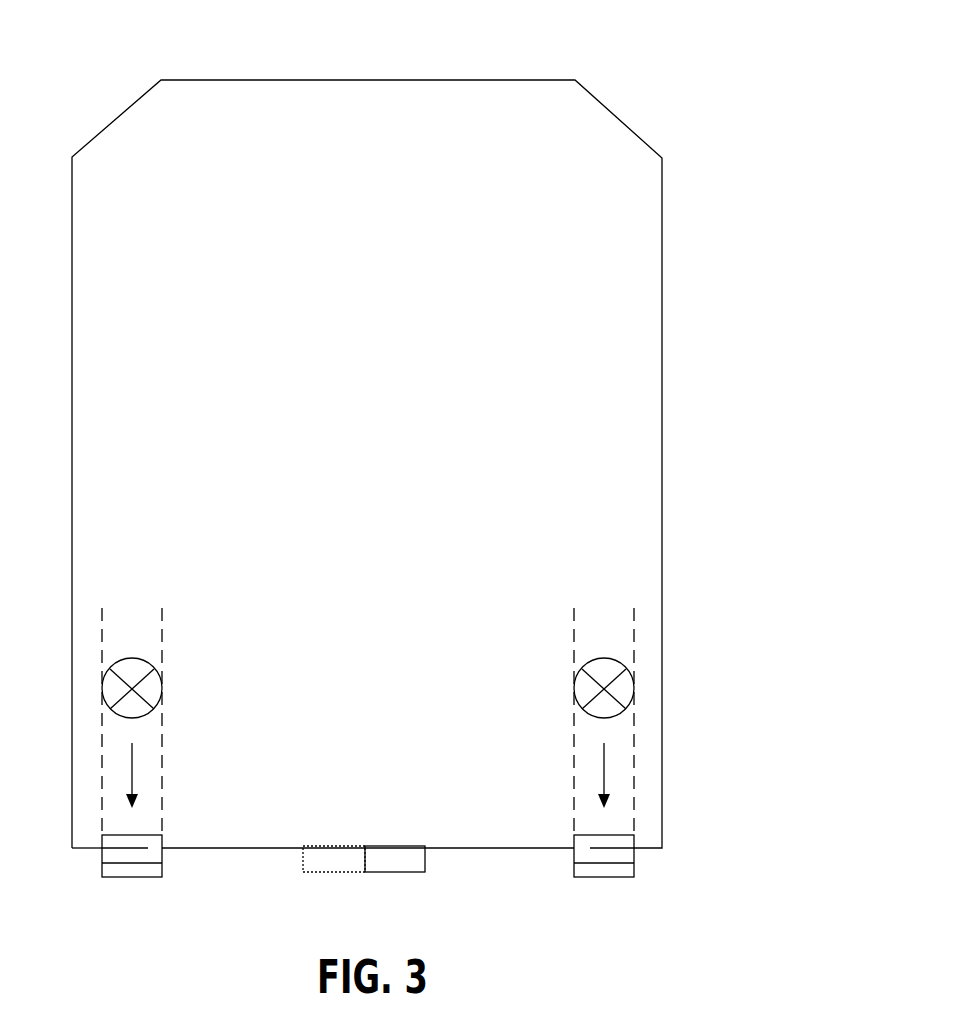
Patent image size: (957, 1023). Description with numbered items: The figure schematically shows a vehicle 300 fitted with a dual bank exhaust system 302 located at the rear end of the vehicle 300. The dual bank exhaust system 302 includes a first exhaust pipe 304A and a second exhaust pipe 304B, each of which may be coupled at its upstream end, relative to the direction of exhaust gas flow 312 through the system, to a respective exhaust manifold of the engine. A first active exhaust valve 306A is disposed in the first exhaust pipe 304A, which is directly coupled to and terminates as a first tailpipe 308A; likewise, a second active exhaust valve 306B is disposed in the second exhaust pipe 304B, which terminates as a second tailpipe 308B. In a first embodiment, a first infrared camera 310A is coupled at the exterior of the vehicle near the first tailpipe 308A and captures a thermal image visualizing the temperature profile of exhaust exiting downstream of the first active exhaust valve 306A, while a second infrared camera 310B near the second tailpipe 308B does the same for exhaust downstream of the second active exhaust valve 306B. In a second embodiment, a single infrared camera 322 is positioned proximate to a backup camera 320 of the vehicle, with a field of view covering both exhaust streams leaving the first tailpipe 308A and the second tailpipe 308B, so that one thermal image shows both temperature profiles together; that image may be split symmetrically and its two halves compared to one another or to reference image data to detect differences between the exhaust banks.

The vehicle 300 is at (680, 110).
The dual bank exhaust system 302 is at (746, 666).
The first exhaust pipe 304A is at (573, 747).
The second exhaust pipe 304B is at (163, 745).
The first active exhaust valve 306A is at (602, 659).
The second active exhaust valve 306B is at (142, 659).
The first tailpipe 308A is at (603, 879).
The second tailpipe 308B is at (130, 879).
The first infrared camera 310A is at (590, 848).
The second infrared camera 310B is at (148, 848).
The direction of exhaust gas flow 312 is at (132, 773).
The backup camera 320 is at (395, 873).
The single infrared camera 322 is at (340, 873).